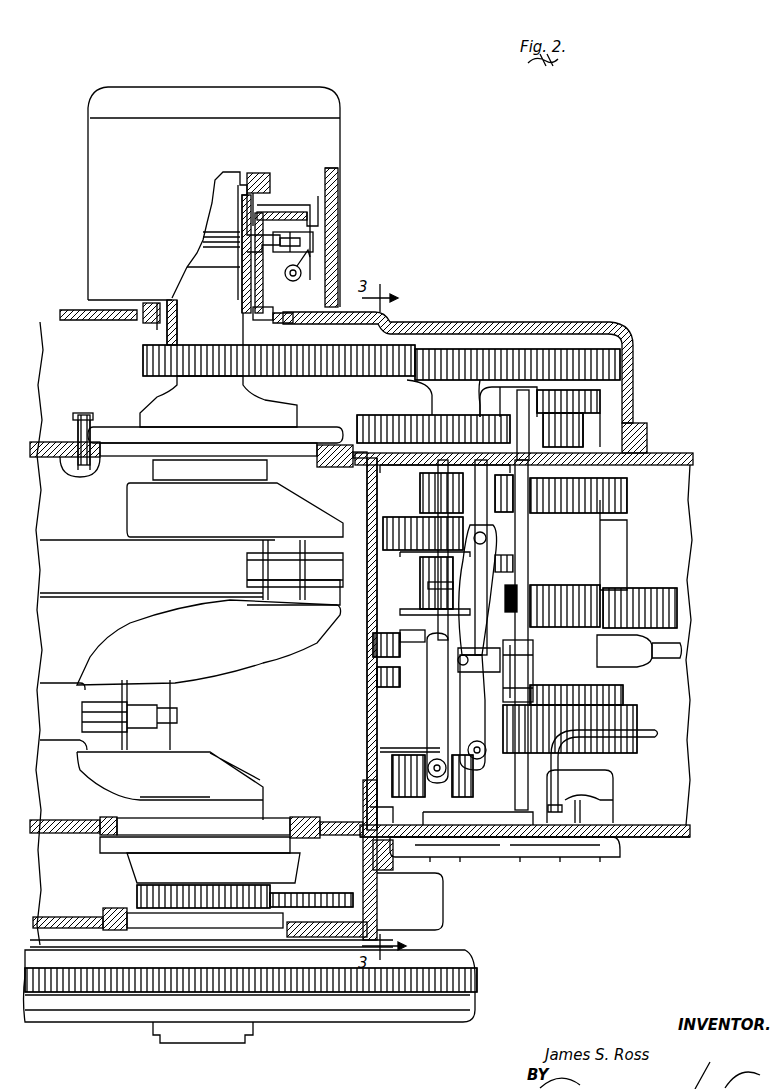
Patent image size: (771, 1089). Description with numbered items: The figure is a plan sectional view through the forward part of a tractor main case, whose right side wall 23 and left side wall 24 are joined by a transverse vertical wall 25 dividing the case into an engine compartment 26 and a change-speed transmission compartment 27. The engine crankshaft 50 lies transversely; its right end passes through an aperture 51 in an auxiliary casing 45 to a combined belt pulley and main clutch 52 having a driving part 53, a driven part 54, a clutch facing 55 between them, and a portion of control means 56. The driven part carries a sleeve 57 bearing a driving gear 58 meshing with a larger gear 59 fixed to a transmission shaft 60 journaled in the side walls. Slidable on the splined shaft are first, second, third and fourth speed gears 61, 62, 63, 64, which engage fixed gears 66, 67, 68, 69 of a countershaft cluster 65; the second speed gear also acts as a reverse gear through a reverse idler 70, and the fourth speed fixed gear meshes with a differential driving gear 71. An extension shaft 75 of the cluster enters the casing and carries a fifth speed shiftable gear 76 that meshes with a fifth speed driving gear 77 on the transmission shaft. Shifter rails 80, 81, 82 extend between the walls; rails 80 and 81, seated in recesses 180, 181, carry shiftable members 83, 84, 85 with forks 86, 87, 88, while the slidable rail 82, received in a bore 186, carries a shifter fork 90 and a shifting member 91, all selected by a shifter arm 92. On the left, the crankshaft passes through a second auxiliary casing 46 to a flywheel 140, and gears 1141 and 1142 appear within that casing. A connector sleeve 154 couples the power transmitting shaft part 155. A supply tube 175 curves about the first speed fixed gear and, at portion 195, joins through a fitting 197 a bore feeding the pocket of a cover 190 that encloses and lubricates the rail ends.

The right side wall 23 is at (690, 455).
The left side wall 24 is at (625, 837).
The transverse vertical wall 25 is at (367, 712).
The engine compartment 26 is at (270, 719).
The change-speed transmission compartment 27 is at (660, 551).
The auxiliary casing 45 is at (630, 335).
The second auxiliary casing 46 is at (430, 912).
The crankshaft 50 is at (125, 642).
The aperture 51 is at (140, 318).
The combined belt pulley and main clutch 52 is at (358, 205).
The driving part 53 is at (272, 195).
The driven part 54 is at (313, 238).
The clutch facing 55 is at (300, 213).
The control means 56 is at (315, 270).
The sleeve 57 is at (143, 352).
The driving gear 58 is at (150, 378).
The larger gear 59 is at (495, 349).
The transmission shaft 60 is at (367, 490).
The first speed gear 61 is at (392, 778).
The second speed gear 62 is at (383, 530).
The third speed gear 63 is at (377, 677).
The fourth speed gear 64 is at (367, 642).
The countershaft cluster 65 is at (613, 534).
The first speed fixed gear 66 is at (620, 755).
The second speed fixed gear 67 is at (627, 493).
The third speed fixed gear 68 is at (623, 698).
The fourth speed fixed gear 69 is at (605, 590).
The reverse idler 70 is at (530, 580).
The differential driving gear 71 is at (675, 605).
The extension shaft 75 is at (588, 427).
The fifth speed shiftable gear 76 is at (605, 400).
The fifth speed driving gear 77 is at (357, 425).
The shifter rail 80 is at (420, 577).
The shifter rail 81 is at (492, 522).
The shifter rail 82 is at (530, 541).
The shiftable member 83 is at (427, 723).
The shiftable member 84 is at (495, 560).
The shiftable member 85 is at (533, 645).
The shifter fork 86 is at (380, 749).
The shifting fork 87 is at (367, 548).
The shifter fork 88 is at (407, 635).
The shifter fork 90 is at (535, 390).
The shifting member 91 is at (533, 668).
The shifter arm 92 is at (460, 670).
The flywheel 140 is at (385, 1012).
The connector sleeve 154 is at (637, 663).
The power transmitting shaft part 155 is at (672, 648).
The supply tube 175 is at (662, 735).
The recess 180 is at (420, 490).
The recess 181 is at (497, 412).
The bore 186 is at (585, 440).
The cover 190 is at (538, 860).
The tube portion 195 is at (560, 792).
The fitting 197 is at (575, 805).
The gear 1141 is at (137, 895).
The gear 1142 is at (315, 900).